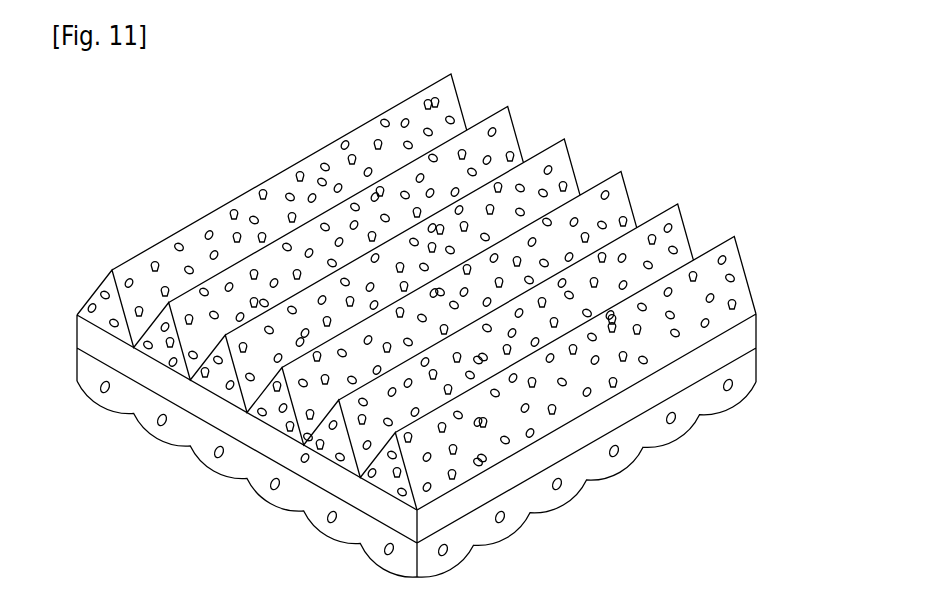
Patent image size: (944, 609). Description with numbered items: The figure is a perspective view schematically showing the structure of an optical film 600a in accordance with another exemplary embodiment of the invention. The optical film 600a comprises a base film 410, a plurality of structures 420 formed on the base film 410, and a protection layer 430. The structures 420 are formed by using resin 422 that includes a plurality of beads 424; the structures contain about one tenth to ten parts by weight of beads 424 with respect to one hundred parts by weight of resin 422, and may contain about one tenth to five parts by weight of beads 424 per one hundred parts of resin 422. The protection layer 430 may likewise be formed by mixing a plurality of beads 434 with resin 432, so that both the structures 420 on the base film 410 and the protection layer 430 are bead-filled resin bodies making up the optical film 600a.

The optical film 600a is at (122, 95).
The base film 410 is at (375, 503).
The structures 420 is at (416, 334).
The resin 422 is at (498, 458).
The beads 424 is at (556, 412).
The protection layer 430 is at (416, 482).
The resin 432 is at (207, 452).
The beads 434 is at (272, 485).